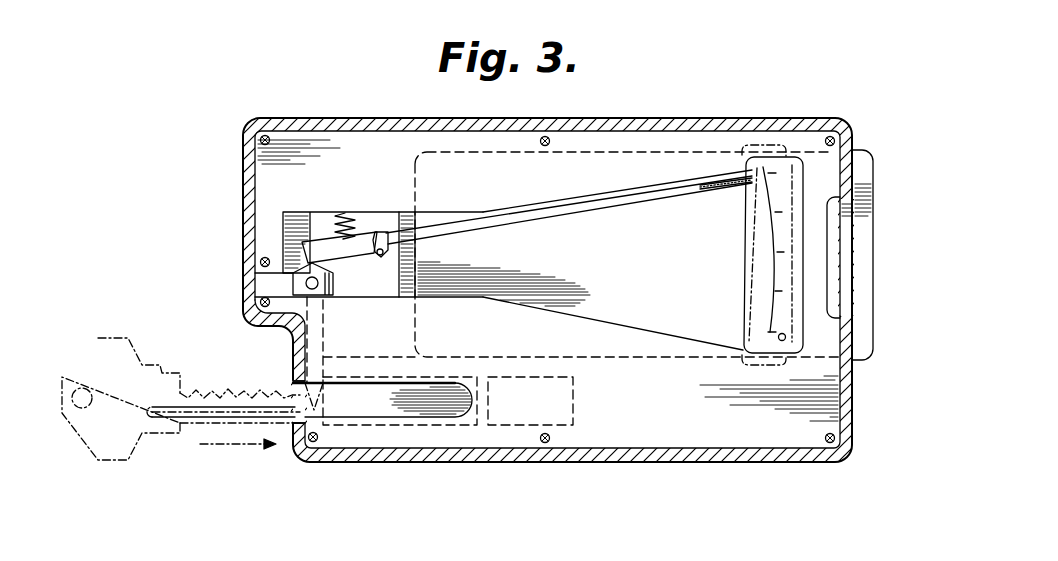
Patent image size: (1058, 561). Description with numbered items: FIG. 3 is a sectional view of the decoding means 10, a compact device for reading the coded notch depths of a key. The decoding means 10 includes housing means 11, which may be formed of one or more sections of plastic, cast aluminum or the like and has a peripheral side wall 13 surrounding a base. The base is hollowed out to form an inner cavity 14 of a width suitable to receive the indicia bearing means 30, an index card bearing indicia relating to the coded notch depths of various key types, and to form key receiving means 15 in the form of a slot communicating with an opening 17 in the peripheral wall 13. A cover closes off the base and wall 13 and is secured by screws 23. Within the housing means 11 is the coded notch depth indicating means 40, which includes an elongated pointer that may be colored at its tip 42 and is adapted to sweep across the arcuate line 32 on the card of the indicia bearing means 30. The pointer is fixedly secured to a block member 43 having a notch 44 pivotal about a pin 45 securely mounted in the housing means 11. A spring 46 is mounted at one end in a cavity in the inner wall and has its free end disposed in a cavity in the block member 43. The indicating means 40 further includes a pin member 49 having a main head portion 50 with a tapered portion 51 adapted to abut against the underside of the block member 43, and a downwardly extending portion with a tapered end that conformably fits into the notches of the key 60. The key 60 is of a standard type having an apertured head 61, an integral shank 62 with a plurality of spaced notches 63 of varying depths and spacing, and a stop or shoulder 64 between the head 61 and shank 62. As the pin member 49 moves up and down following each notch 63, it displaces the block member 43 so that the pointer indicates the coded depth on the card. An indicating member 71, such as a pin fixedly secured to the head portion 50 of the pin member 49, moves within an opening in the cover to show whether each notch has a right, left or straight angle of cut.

The decoding means 10 is at (712, 109).
The housing means 11 is at (592, 461).
The peripheral side wall 13 is at (362, 118).
The inner cavity 14 is at (641, 160).
The key receiving means 15 is at (442, 394).
The opening 17 is at (306, 424).
The screws 23 is at (273, 118).
The indicia bearing means 30 is at (876, 185).
The arcuate line 32 is at (760, 294).
The coded notch depth indicating means 40 is at (371, 224).
The tip 42 is at (722, 190).
The block member 43 is at (310, 243).
The notch 44 is at (387, 235).
The pin 45 is at (385, 259).
The spring 46 is at (331, 227).
The pin member 49 is at (361, 340).
The main head portion 50 is at (326, 296).
The tapered portion 51 is at (304, 275).
The key 60 is at (181, 378).
The apertured head 61 is at (107, 433).
The shank 62 is at (184, 397).
The notches 63 is at (272, 397).
The stop or shoulder 64 is at (190, 430).
The indicating member 71 is at (306, 284).